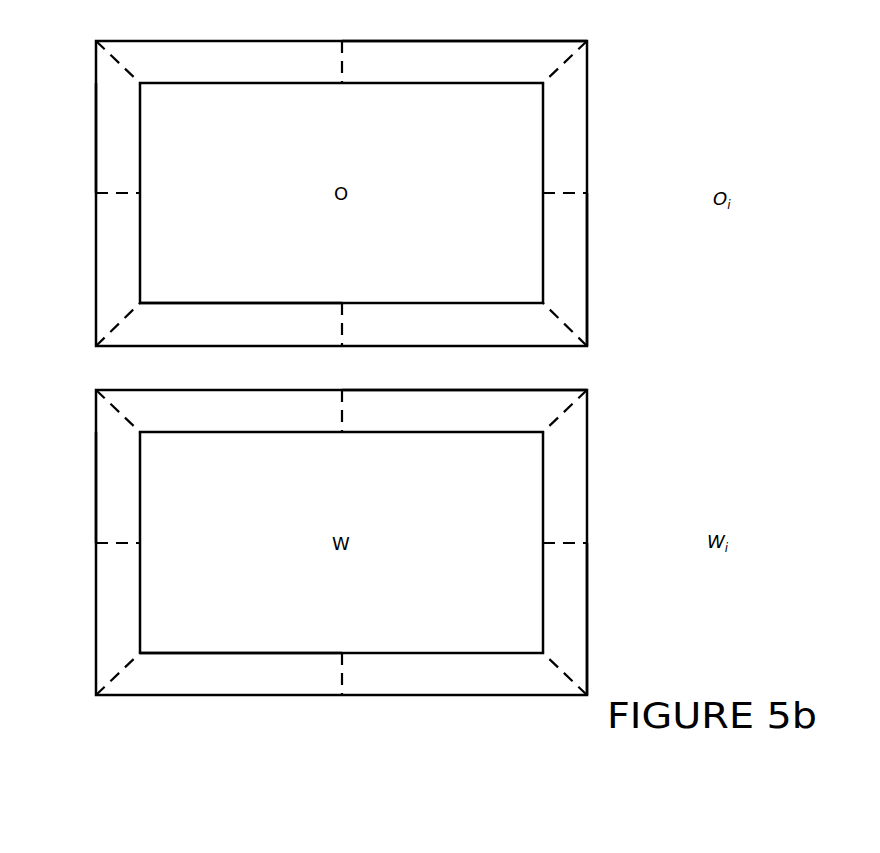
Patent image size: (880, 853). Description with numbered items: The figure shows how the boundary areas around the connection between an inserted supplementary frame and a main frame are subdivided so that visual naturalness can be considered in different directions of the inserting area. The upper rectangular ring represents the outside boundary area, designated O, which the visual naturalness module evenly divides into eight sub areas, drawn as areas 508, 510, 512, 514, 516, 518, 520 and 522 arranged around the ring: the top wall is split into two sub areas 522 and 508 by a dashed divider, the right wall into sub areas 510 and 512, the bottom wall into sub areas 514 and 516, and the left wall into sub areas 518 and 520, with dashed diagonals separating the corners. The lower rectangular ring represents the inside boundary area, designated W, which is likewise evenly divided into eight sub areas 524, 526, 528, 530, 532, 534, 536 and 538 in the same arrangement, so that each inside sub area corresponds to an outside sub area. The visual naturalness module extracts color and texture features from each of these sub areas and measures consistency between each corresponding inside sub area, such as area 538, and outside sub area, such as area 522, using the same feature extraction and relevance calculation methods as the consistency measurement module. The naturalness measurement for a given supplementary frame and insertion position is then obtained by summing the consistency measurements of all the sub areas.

The sub area of outside boundary area O_i 508 is at (563, 41).
The sub area of outside boundary area O_i 510 is at (587, 100).
The sub area of outside boundary area O_i 512 is at (587, 257).
The sub area of outside boundary area O_i 514 is at (377, 303).
The sub area of outside boundary area O_i 516 is at (175, 303).
The sub area of outside boundary area O_i 518 is at (96, 257).
The sub area of outside boundary area O_i 520 is at (96, 100).
The sub area of outside boundary area O_i 522 is at (115, 41).
The sub area of inside boundary area W_i 524 is at (562, 390).
The sub area of inside boundary area W_i 526 is at (587, 443).
The sub area of inside boundary area W_i 528 is at (587, 621).
The sub area of inside boundary area W_i 530 is at (377, 653).
The sub area of inside boundary area W_i 532 is at (181, 653).
The sub area of inside boundary area W_i 534 is at (96, 621).
The sub area of inside boundary area W_i 536 is at (96, 443).
The sub area of inside boundary area W_i 538 is at (120, 390).